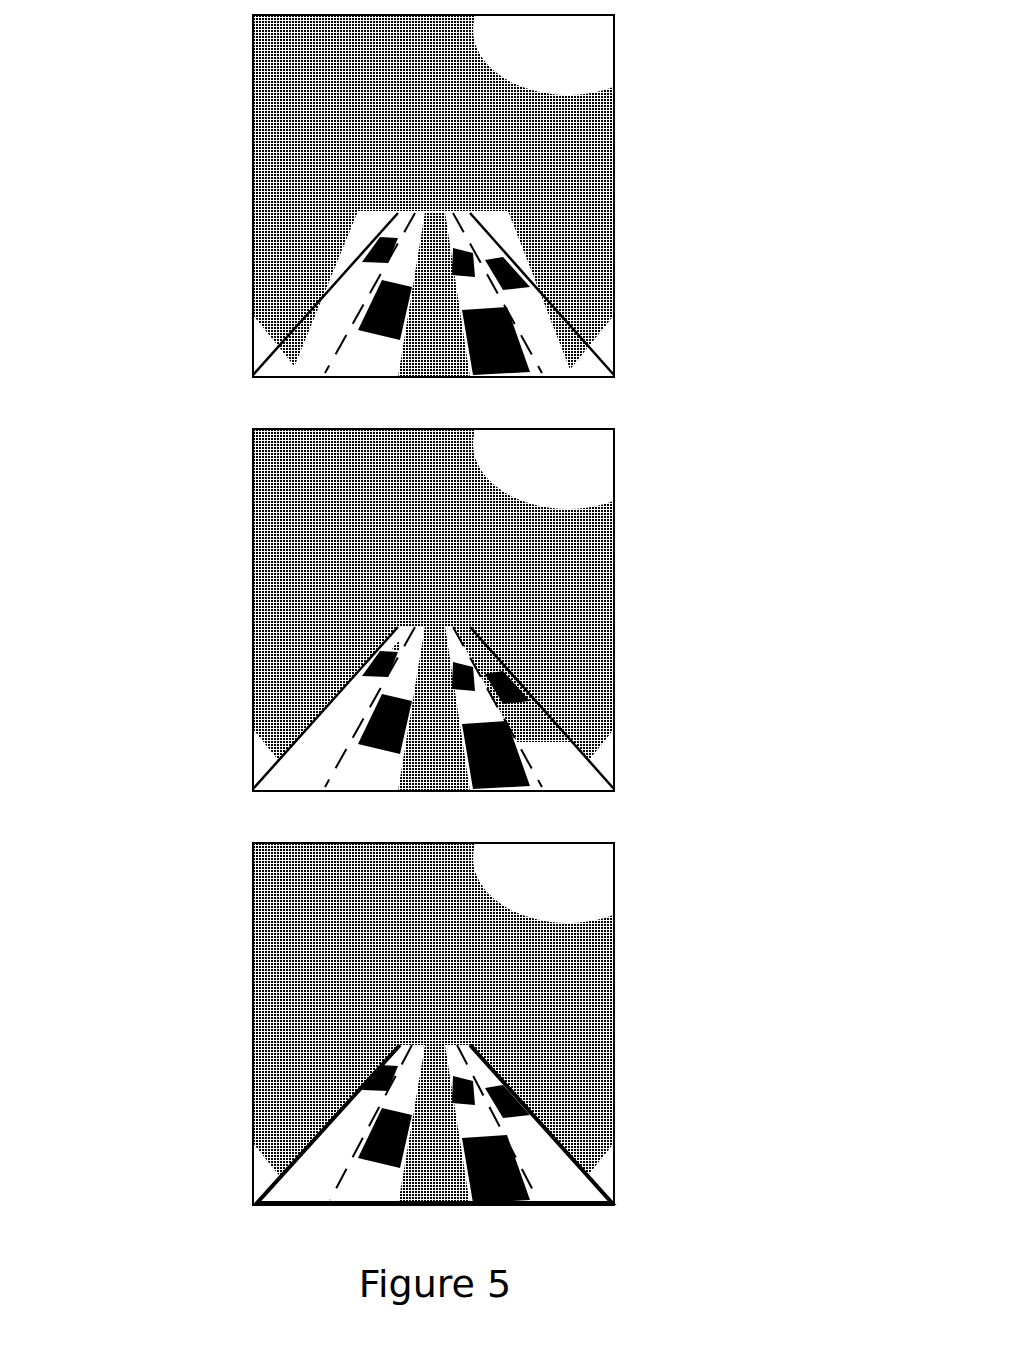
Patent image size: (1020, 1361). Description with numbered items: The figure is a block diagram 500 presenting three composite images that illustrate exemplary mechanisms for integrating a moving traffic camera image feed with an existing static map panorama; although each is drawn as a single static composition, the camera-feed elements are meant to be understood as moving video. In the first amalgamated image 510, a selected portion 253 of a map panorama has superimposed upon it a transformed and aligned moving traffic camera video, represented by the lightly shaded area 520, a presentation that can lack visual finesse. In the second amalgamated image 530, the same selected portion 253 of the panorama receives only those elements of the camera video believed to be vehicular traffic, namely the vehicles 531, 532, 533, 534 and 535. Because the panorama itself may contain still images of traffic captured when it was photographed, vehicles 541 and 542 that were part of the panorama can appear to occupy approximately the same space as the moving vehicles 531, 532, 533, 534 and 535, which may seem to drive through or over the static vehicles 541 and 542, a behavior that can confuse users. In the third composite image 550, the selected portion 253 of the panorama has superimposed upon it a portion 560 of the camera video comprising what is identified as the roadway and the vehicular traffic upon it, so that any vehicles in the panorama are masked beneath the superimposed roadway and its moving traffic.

The block diagram 500 is at (133, 93).
The amalgamated image 510 is at (494, 212).
The lightly shaded area 520 is at (374, 310).
The selected portion of a map panorama 253 is at (362, 257).
The amalgamated image 530 is at (538, 610).
The vehicle 531 is at (495, 642).
The vehicle 532 is at (530, 670).
The vehicle 533 is at (522, 755).
The vehicle 534 is at (351, 662).
The vehicle 535 is at (377, 742).
The vehicle 541 is at (531, 684).
The vehicle 542 is at (369, 619).
The composite image 550 is at (503, 1024).
The portion of the moving traffic camera video 560 is at (392, 1125).